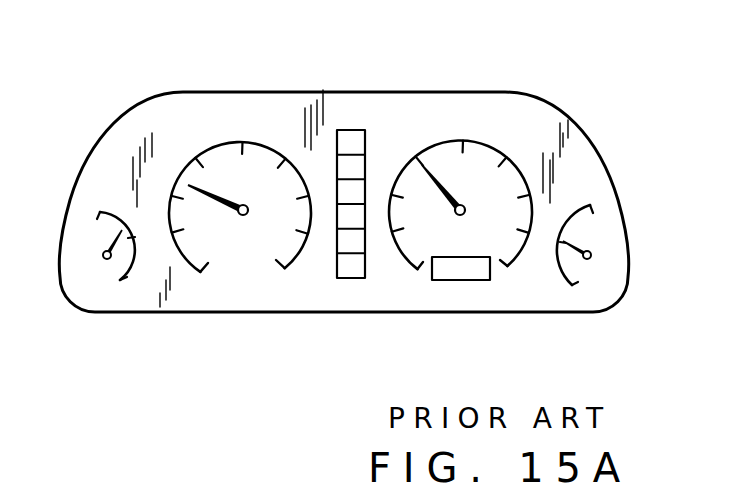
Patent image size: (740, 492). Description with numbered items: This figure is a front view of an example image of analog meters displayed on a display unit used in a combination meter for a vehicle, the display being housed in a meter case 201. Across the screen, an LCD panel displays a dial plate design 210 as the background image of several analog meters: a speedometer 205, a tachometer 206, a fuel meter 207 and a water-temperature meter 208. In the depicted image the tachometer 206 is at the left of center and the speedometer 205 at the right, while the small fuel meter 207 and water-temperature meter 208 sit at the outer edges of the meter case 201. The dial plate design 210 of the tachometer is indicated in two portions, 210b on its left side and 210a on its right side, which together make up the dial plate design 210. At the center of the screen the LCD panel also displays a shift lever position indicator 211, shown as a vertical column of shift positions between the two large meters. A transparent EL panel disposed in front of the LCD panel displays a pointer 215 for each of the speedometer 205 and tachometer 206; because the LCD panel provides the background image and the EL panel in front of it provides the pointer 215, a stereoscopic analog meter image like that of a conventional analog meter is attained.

The meter case 201 is at (482, 313).
The speedometer 205 is at (444, 128).
The tachometer 206 is at (213, 131).
The fuel meter 207 is at (89, 206).
The water-temperature meter 208 is at (574, 200).
The dial plate design 210 is at (135, 243).
The dial scale right portion 210a is at (293, 262).
The dial scale left portion 210b is at (248, 277).
The shift lever position indicator 211 is at (351, 122).
The pointer 215 is at (228, 197).